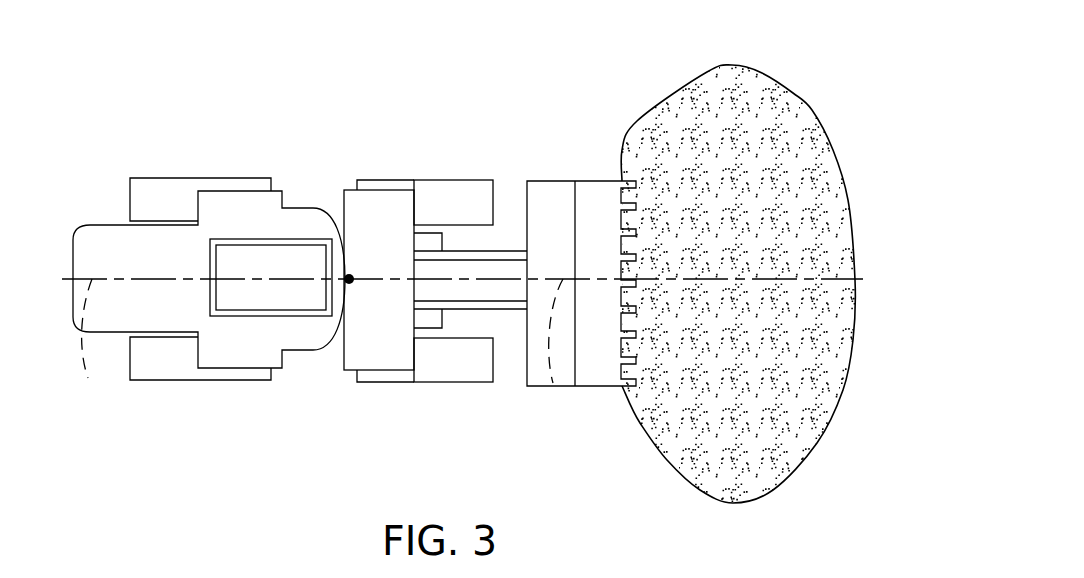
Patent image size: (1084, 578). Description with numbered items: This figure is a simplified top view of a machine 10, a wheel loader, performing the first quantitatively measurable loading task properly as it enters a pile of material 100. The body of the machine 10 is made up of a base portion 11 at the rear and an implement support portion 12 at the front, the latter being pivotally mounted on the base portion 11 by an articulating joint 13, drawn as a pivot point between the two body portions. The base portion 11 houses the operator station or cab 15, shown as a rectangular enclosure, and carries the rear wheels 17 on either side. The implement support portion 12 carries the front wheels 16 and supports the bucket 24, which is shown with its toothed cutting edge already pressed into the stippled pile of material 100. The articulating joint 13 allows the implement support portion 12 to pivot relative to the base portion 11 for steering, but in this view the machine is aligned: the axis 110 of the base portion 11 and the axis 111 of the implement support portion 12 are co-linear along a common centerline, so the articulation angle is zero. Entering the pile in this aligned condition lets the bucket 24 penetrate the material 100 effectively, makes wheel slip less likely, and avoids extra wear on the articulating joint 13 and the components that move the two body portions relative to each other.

The machine 10 is at (251, 126).
The base portion 11 is at (107, 250).
The implement support portion 12 is at (370, 218).
The articulating joint 13 is at (353, 278).
The cab 15 is at (262, 257).
The front wheels 16 is at (433, 194).
The rear wheels 17 is at (167, 188).
The bucket 24 is at (556, 194).
The material 100 is at (790, 150).
The axis of the base portion 110 is at (88, 378).
The axis of the implement support portion 111 is at (552, 380).